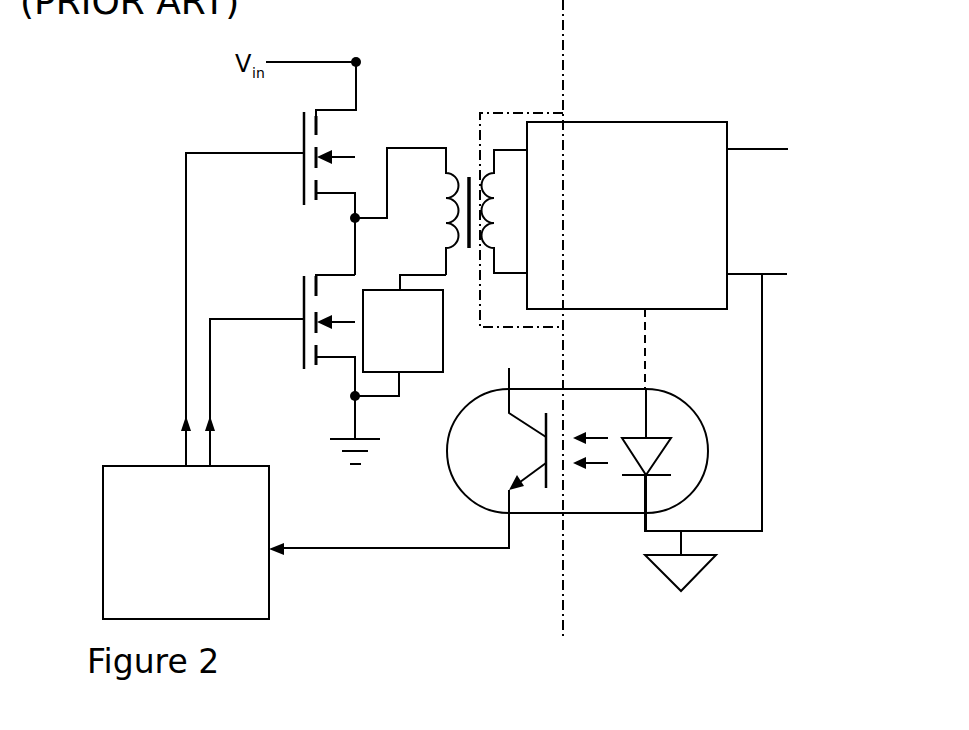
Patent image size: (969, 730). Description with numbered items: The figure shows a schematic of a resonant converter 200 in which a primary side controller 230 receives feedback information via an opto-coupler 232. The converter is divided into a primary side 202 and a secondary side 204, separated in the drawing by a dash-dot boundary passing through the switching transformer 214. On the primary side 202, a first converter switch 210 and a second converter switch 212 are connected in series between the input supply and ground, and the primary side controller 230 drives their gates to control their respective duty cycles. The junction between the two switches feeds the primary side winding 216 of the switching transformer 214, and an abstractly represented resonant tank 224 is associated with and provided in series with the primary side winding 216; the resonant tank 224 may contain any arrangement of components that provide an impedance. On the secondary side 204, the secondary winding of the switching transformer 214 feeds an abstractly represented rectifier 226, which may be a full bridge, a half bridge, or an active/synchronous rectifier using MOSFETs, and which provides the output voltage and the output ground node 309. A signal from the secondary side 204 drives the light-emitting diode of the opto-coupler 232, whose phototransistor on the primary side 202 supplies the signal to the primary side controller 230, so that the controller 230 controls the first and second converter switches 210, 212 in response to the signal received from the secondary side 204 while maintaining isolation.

The resonant converter 200 is at (756, 74).
The primary side 202 is at (555, 28).
The secondary side 204 is at (603, 28).
The first converter switch 210 is at (303, 133).
The second converter switch 212 is at (303, 298).
The switching transformer 214 is at (466, 274).
The primary side winding 216 is at (447, 195).
The resonant tank 224 is at (430, 372).
The rectifier 226 is at (640, 122).
The primary side controller 230 is at (103, 466).
The opto-coupler 232 is at (690, 493).
The output ground node 309 is at (779, 424).